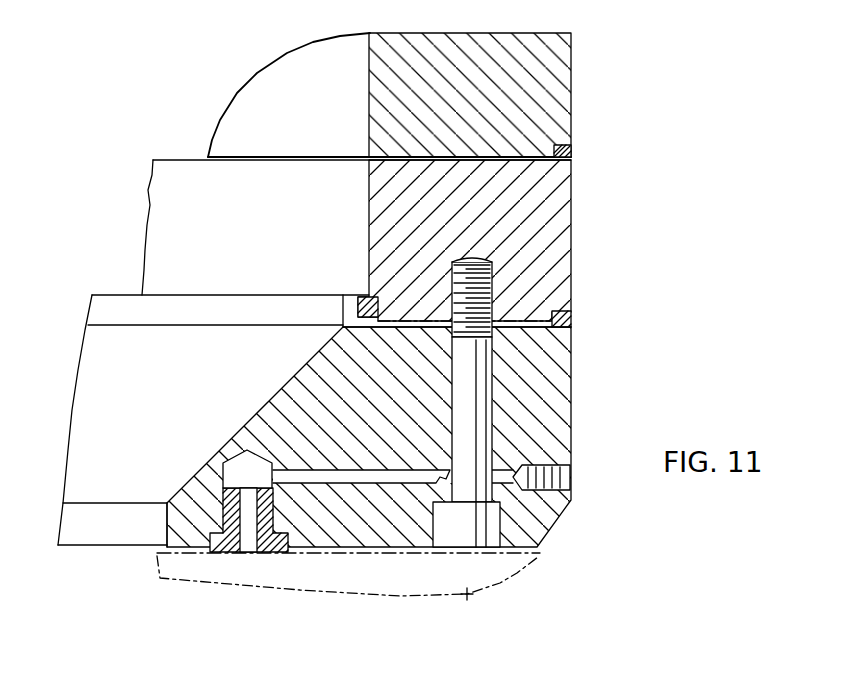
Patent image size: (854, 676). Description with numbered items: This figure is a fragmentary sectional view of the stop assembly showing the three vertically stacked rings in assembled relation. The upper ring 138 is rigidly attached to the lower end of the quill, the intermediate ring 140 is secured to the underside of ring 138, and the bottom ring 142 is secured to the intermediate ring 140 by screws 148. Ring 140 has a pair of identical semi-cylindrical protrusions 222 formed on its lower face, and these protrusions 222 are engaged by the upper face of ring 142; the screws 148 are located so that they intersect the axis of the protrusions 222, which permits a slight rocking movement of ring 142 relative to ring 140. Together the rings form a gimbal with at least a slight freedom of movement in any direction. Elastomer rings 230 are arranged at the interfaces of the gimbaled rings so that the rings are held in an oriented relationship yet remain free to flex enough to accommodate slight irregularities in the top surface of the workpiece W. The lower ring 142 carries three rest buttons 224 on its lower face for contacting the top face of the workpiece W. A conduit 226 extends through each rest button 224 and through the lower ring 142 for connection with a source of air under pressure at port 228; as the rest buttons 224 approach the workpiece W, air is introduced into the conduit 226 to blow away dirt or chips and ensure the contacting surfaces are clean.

The ring 138 is at (563, 70).
The elastomer rings 230 is at (573, 155).
The ring 140 is at (562, 227).
The protrusions 222 is at (552, 337).
The ring 142 is at (560, 410).
The port 228 is at (574, 472).
The screws 148 is at (490, 548).
The conduit 226 is at (247, 505).
The rest buttons 224 is at (233, 550).
The workpiece W is at (471, 598).